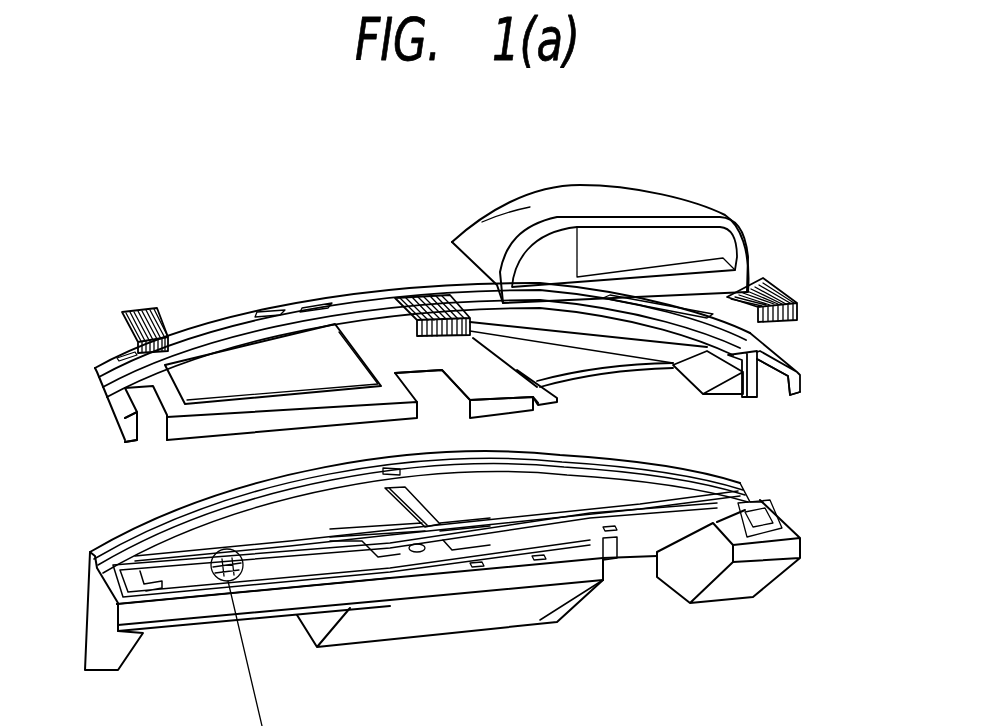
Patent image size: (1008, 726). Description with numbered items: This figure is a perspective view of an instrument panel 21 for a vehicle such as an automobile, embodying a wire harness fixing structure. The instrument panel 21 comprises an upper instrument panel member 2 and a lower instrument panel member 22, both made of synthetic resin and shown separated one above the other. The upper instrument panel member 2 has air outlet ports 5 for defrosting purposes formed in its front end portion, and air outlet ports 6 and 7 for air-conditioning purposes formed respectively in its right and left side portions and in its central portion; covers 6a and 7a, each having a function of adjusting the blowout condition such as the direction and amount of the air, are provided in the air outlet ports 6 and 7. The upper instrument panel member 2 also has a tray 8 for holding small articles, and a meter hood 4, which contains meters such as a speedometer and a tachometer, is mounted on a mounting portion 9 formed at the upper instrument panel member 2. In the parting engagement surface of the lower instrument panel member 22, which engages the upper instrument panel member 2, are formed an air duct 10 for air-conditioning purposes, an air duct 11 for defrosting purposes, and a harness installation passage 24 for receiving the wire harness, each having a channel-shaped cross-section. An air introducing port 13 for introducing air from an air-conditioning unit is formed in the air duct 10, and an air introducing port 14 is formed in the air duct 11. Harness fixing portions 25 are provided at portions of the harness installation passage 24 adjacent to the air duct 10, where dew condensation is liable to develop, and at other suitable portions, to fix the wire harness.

The upper instrument panel member 2 is at (796, 350).
The meter hood 4 is at (750, 238).
The air outlet ports for defrosting purposes 5 is at (326, 305).
The air outlet ports for air-conditioning purposes 6 is at (142, 422).
The covers 6a is at (144, 314).
The air outlet port for air-conditioning purposes 7 is at (444, 414).
The cover 7a is at (424, 304).
The tray 8 is at (242, 360).
The mounting portion 9 is at (632, 378).
The air duct for air-conditioning purposes 10 is at (557, 525).
The air duct for defrosting purposes 11 is at (148, 536).
The air introducing port 13 is at (417, 556).
The air introducing port 14 is at (400, 475).
The instrument panel 21 is at (433, 208).
The lower instrument panel member 22 is at (765, 488).
The harness installation passage 24 is at (282, 568).
The harness fixing portions 25 is at (227, 549).